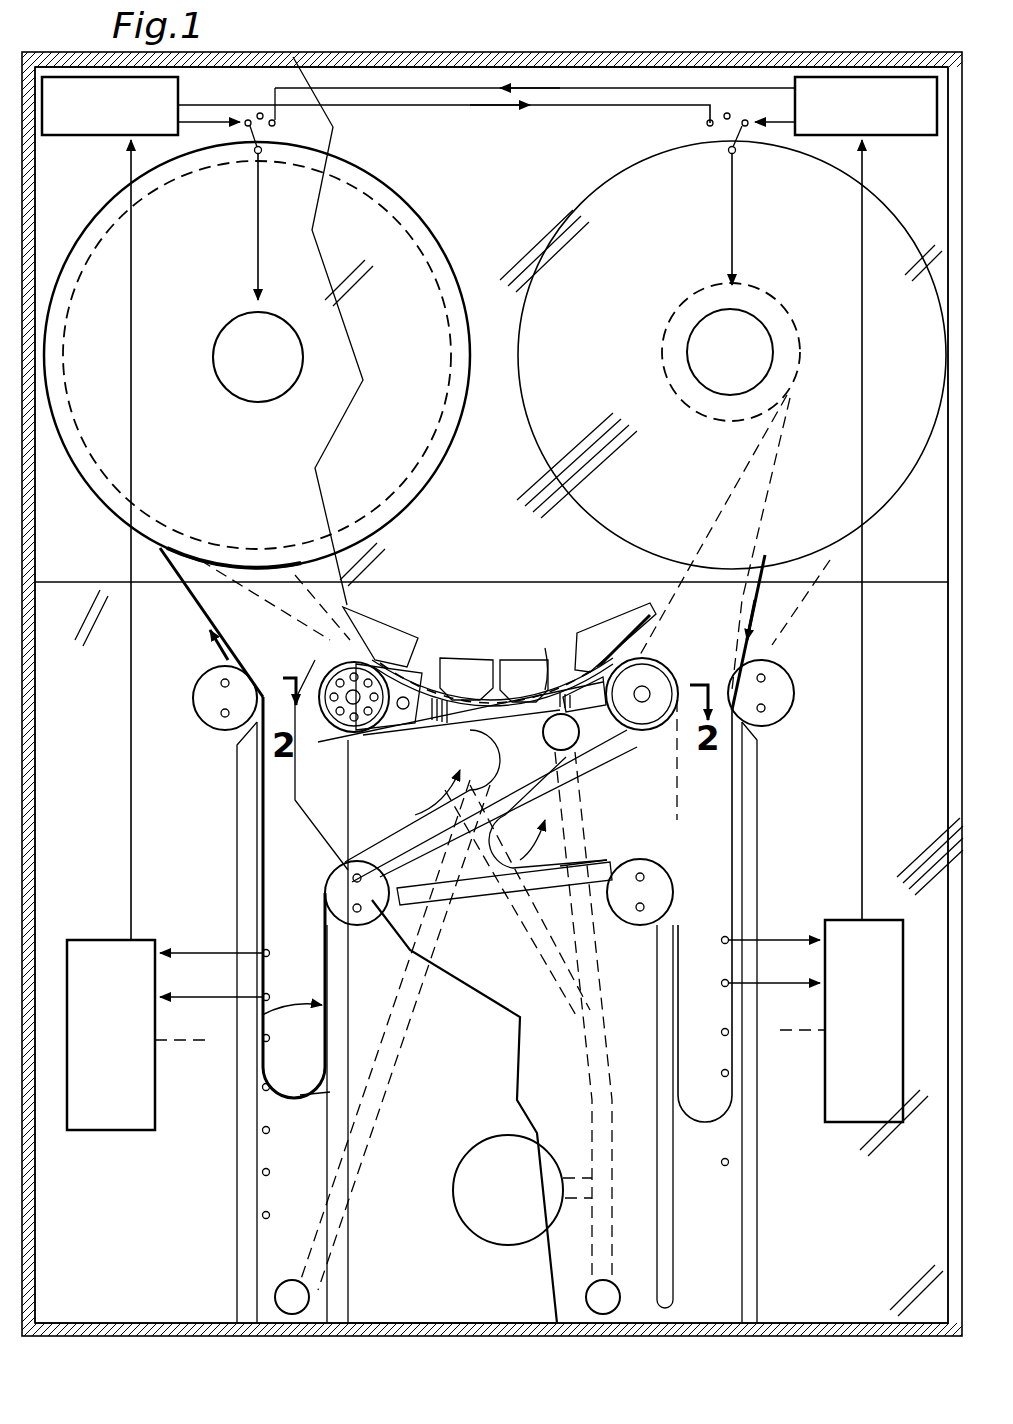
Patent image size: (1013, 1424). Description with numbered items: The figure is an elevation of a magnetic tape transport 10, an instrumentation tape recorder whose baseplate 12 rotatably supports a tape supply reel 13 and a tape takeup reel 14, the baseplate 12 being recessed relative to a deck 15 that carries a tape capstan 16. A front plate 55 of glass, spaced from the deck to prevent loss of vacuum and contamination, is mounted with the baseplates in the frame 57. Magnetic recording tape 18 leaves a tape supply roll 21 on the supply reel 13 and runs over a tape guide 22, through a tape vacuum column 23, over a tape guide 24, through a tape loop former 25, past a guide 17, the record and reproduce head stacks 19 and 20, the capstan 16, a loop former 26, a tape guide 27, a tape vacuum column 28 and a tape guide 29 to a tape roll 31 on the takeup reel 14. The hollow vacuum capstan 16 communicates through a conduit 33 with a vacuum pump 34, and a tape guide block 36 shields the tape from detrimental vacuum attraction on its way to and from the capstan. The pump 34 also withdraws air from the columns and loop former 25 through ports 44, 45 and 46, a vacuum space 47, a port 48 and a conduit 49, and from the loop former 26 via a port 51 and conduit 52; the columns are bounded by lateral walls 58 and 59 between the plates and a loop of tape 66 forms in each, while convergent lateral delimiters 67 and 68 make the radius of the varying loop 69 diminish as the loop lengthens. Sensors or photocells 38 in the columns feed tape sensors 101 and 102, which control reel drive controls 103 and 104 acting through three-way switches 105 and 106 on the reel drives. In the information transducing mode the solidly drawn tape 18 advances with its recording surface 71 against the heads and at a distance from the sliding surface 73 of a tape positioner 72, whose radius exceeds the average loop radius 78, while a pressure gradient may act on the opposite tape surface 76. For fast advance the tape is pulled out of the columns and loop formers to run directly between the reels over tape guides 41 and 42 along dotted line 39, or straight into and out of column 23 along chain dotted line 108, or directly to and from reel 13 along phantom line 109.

The magnetic tape transport 10 is at (155, 1303).
The baseplate 12 is at (476, 76).
The tape supply reel 13 is at (588, 203).
The tape takeup reel 14 is at (100, 455).
The deck 15 is at (495, 600).
The tape capstan 16 is at (342, 712).
The tape guide 17 is at (650, 660).
The magnetic recording tape 18 is at (200, 615).
The record and reproduce head stack 19 is at (525, 672).
The record and reproduce head stack 20 is at (465, 672).
The tape supply roll 21 is at (765, 290).
The tape guide 22 is at (782, 712).
The tape vacuum column 23 is at (745, 1222).
The tape guide 24 is at (665, 888).
The tape loop former 25 is at (540, 872).
The loop former 26 is at (420, 770).
The tape guide 27 is at (368, 925).
The tape vacuum column 28 is at (236, 1238).
The tape guide 29 is at (222, 728).
The tape roll 31 is at (100, 480).
The conduit 33 is at (535, 982).
The vacuum pump 34 is at (500, 1245).
The tape guide block 36 is at (358, 706).
The sensors 38 is at (262, 1040).
The dotted line 39 is at (318, 620).
The tape guide 41 is at (630, 625).
The tape guide 42 is at (412, 598).
The port 44 is at (650, 1318).
The port 45 is at (275, 1290).
The port 46 is at (400, 920).
The vacuum space 47 is at (452, 1260).
The port 48 is at (586, 1292).
The conduit 49 is at (590, 1225).
The port 51 is at (605, 745).
The conduit 52 is at (590, 970).
The front plate 55 is at (467, 1111).
The frame 57 is at (250, 57).
The lateral wall 58 is at (340, 1255).
The lateral wall 59 is at (237, 1172).
The loop of tape 66 is at (262, 1016).
The lateral vacuum column delimiter 67 is at (590, 855).
The lateral vacuum column delimiter 68 is at (590, 752).
The varying loop 69 is at (290, 1090).
The information recording surface 71 is at (735, 645).
The tape positioner 72 is at (535, 730).
The sliding surface 73 is at (559, 649).
The tape surface 76 is at (235, 638).
The average radius 78 is at (292, 1058).
The tape sensor 101 is at (875, 1124).
The tape sensor 102 is at (100, 1132).
The reel drive control 103 is at (900, 136).
The reel drive control 104 is at (108, 138).
The three-way switch 105 is at (740, 136).
The three-way switch 106 is at (255, 155).
The chain dotted line 108 is at (676, 800).
The phantom line 109 is at (730, 465).